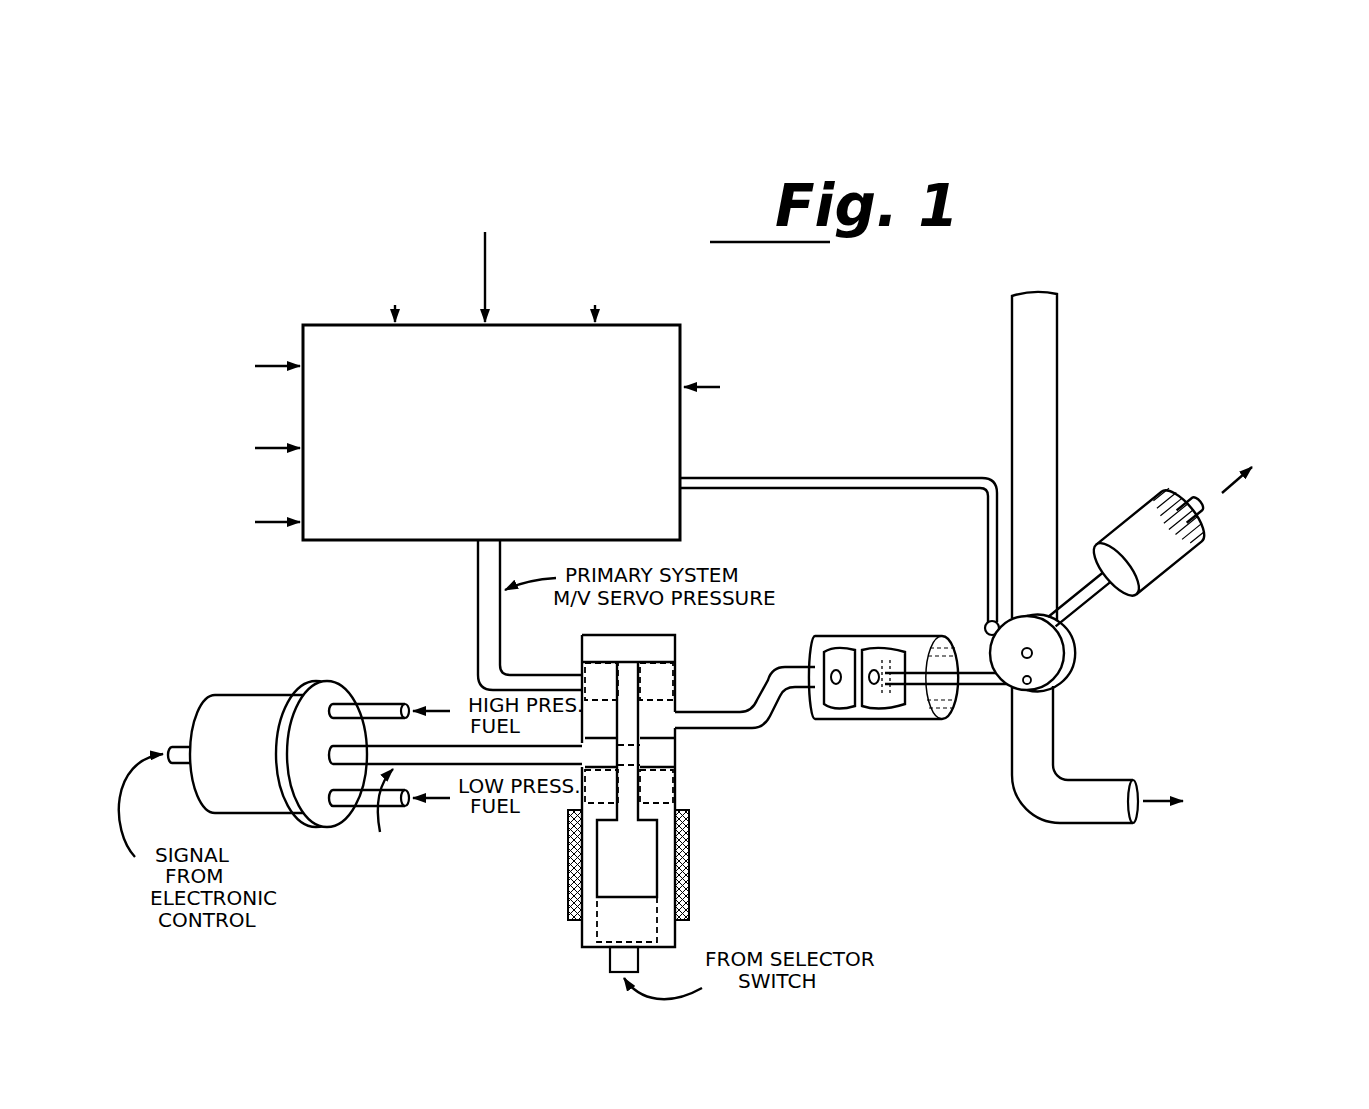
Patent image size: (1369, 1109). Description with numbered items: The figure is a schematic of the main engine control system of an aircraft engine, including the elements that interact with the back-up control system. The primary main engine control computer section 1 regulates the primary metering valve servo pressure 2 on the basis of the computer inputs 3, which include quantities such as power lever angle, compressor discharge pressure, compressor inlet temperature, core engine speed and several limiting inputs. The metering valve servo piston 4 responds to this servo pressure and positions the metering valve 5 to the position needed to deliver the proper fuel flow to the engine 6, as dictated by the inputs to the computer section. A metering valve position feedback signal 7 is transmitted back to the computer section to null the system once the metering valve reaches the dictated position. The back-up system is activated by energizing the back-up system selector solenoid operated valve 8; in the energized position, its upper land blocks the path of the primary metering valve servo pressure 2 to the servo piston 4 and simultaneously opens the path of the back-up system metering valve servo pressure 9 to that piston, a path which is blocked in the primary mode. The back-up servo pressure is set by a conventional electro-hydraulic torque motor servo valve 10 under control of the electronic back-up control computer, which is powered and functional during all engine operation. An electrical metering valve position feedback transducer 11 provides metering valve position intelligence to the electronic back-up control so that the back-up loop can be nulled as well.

The primary main engine control computer section 1 is at (491, 432).
The primary metering valve servo pressure 2 is at (652, 801).
The computer inputs 3 is at (256, 295).
The metering valve servo piston 4 is at (918, 633).
The metering valve 5 is at (1093, 661).
The engine 6 is at (1148, 576).
The metering valve position feedback signal 7 is at (839, 523).
The back-up system selector solenoid operated valve 8 is at (706, 865).
The back-up system metering valve servo pressure 9 is at (455, 844).
The electro-hydraulic torque motor servo valve 10 is at (284, 726).
The electrical metering valve position feedback transducer 11 is at (1182, 530).